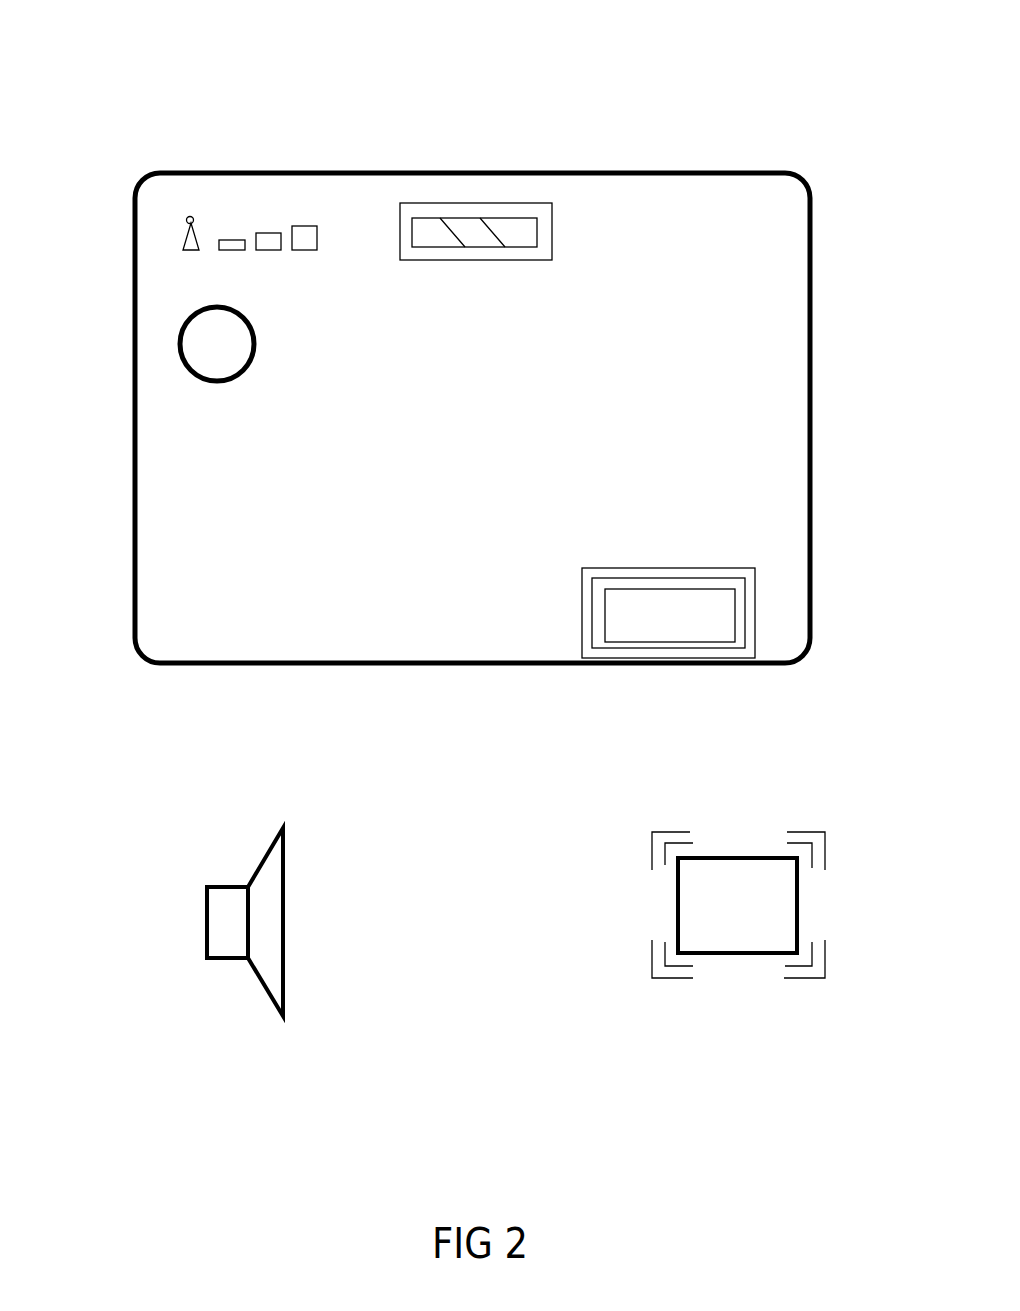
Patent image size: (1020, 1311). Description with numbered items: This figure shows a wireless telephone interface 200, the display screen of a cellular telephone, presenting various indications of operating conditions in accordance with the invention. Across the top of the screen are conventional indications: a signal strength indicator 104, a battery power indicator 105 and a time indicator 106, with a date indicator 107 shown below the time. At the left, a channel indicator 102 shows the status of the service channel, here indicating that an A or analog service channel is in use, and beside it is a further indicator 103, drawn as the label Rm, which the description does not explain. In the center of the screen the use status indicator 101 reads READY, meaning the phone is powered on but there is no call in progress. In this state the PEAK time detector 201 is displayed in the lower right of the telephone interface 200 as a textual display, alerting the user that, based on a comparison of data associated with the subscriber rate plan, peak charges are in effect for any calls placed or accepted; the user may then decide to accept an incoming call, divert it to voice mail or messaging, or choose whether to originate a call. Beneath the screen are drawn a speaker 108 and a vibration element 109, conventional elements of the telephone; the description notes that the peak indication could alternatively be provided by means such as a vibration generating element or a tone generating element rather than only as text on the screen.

The wireless telephone interface 200 is at (572, 173).
The use status indicator 101 is at (393, 530).
The channel indicator 102 is at (178, 350).
The room mode indicator Rm 103 is at (323, 300).
The signal strength indicator 104 is at (178, 247).
The battery power indicator 105 is at (446, 204).
The time indicator 106 is at (678, 212).
The date indicator 107 is at (732, 320).
The speaker 108 is at (196, 904).
The vibration element 109 is at (676, 899).
The PEAK time detector 201 is at (720, 568).